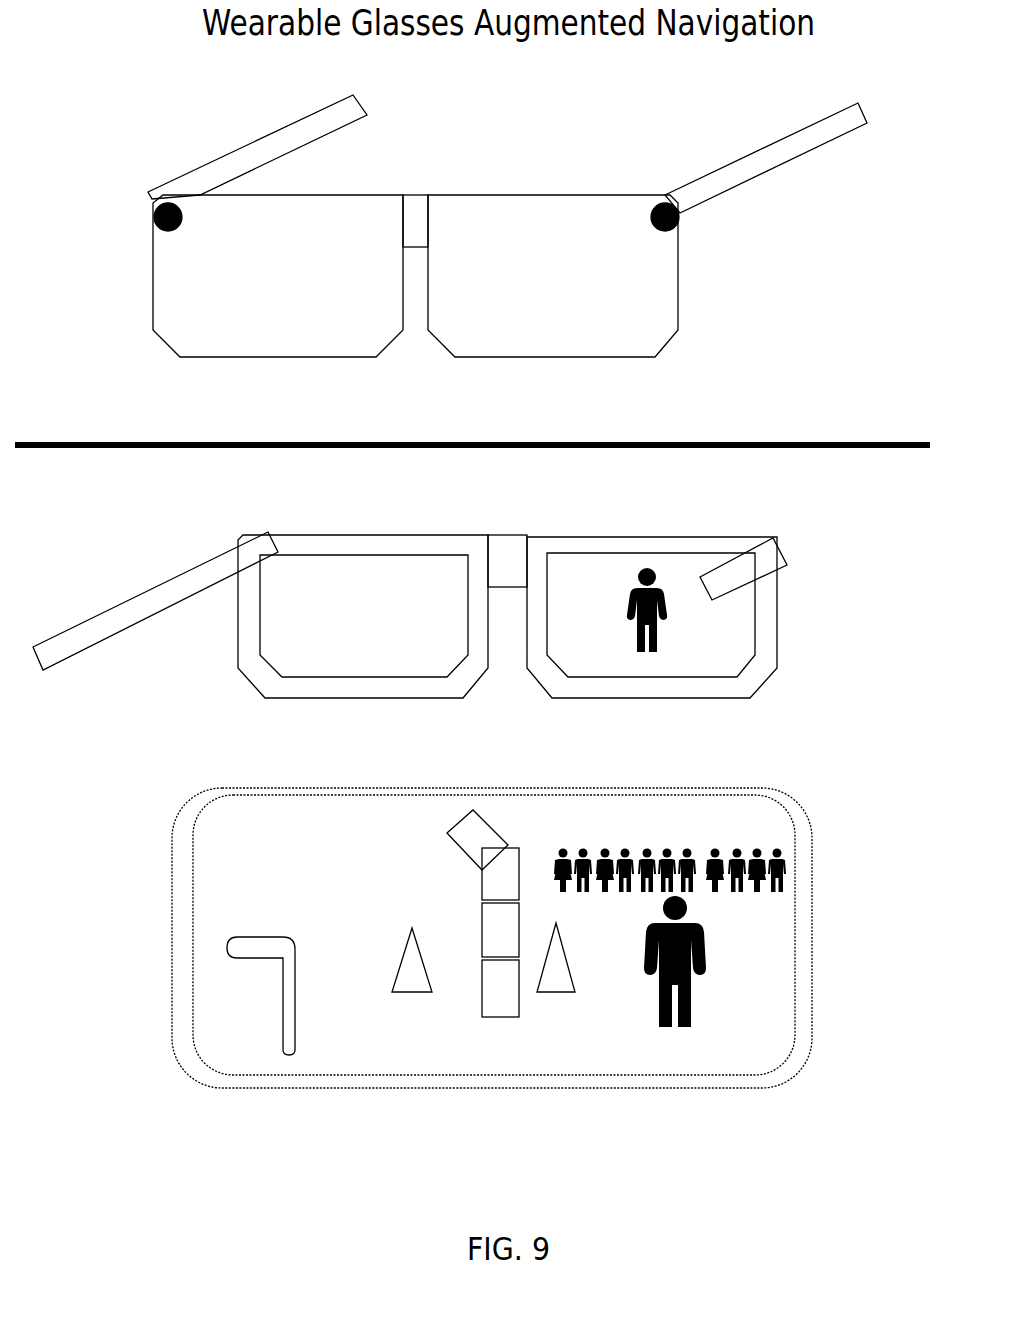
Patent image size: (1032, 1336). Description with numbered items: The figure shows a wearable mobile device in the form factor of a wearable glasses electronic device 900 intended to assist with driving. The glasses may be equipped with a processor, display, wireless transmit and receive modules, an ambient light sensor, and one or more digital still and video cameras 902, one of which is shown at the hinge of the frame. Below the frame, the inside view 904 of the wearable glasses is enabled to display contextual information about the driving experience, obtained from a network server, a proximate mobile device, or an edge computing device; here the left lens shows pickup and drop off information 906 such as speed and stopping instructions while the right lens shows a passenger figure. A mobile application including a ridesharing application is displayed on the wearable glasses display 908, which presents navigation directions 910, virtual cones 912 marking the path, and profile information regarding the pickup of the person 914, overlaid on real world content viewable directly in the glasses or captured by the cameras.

The wearable glasses electronic device 900 is at (532, 203).
The digital still and video camera 902 is at (157, 224).
The inside view of the wearable glasses 904 is at (585, 512).
The pickup and drop off information 906 is at (375, 665).
The wearable glasses display 908 is at (612, 795).
The navigation directions 910 is at (297, 830).
The virtual cones 912 is at (553, 960).
The person to be picked up 914 is at (702, 1017).